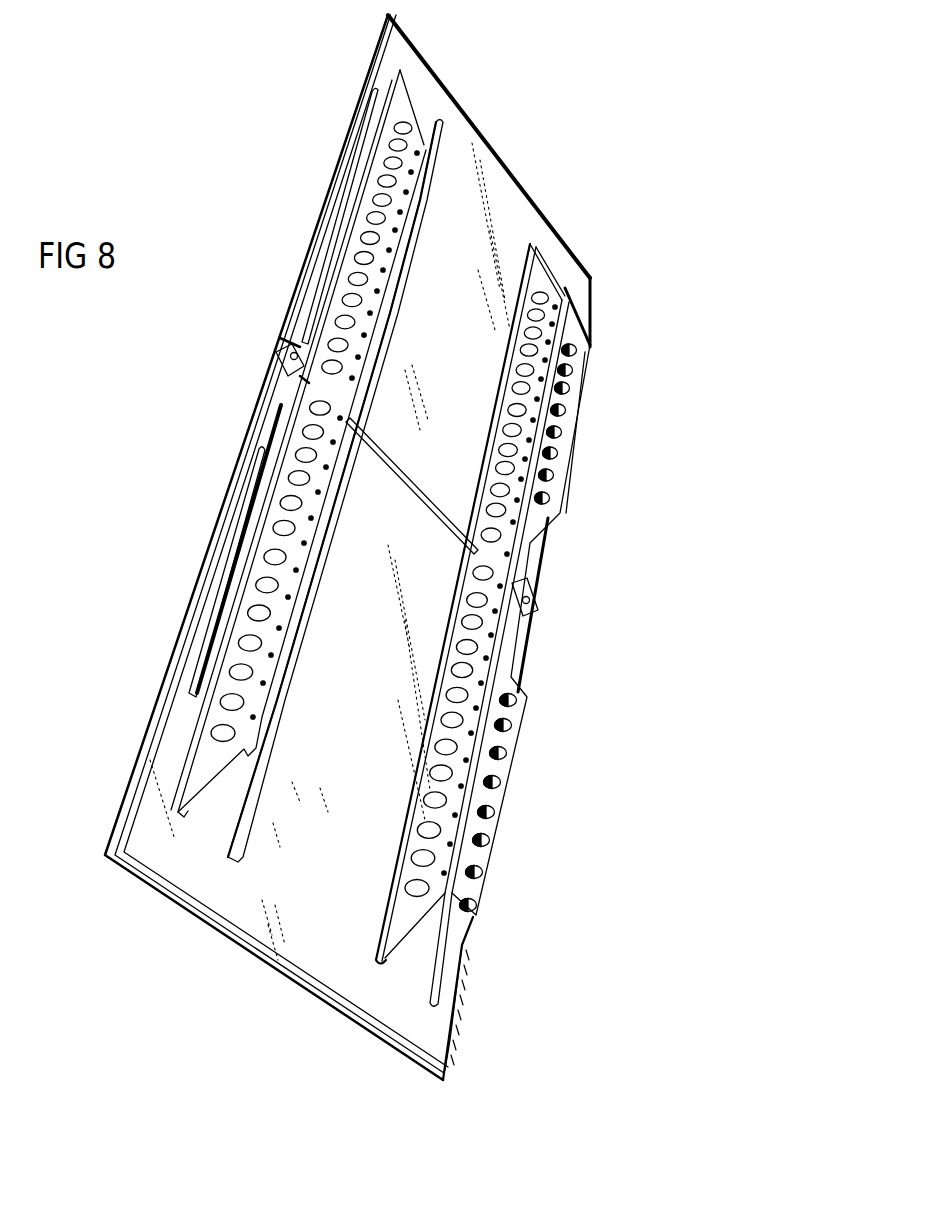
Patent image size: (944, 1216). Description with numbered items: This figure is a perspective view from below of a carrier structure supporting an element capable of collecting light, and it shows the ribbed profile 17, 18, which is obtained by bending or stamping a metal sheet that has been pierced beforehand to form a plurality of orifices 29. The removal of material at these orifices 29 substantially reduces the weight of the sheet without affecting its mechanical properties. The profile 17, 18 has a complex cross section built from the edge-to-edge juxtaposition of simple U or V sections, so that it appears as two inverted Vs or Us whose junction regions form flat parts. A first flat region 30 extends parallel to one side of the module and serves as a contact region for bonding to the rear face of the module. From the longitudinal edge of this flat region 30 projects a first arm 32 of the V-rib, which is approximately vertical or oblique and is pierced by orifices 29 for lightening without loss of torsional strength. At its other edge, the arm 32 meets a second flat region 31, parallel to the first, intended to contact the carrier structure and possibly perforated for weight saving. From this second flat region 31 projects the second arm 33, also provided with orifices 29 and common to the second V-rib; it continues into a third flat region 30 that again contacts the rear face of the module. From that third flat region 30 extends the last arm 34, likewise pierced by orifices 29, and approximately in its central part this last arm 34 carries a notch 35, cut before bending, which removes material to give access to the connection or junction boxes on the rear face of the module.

The profile 17 is at (228, 862).
The profile 18 is at (382, 958).
The orifices 29 is at (473, 917).
The first flat region 30 is at (531, 243).
The second flat region 31 is at (283, 757).
The first arm 32 is at (540, 278).
The second arm 33 is at (566, 289).
The last arm 34 is at (582, 331).
The notch 35 is at (541, 551).